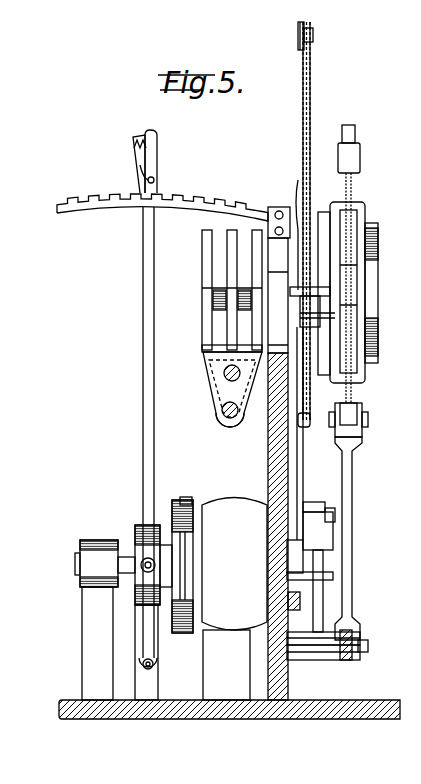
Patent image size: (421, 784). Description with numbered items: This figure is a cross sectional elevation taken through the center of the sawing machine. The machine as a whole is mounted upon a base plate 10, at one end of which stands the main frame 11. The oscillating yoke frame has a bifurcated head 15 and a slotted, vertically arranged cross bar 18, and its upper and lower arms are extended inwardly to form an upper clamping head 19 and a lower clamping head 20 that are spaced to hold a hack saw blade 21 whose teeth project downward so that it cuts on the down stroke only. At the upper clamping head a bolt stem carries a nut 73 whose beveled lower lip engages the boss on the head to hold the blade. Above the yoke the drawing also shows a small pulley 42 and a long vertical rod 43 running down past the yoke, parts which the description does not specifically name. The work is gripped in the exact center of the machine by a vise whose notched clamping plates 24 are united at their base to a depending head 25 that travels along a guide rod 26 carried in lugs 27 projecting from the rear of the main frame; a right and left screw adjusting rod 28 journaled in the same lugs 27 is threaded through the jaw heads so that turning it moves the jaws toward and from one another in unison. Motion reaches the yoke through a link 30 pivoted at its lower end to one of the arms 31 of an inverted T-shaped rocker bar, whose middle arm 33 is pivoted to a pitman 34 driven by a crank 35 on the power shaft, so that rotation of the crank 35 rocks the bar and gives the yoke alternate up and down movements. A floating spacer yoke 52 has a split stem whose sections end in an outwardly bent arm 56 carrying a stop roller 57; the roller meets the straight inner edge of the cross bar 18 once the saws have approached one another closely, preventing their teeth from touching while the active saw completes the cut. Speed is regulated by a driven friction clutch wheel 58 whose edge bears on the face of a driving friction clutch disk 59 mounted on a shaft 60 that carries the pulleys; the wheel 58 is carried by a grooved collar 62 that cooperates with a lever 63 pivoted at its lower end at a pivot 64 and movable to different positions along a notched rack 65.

The base plate 10 is at (325, 700).
The main frame 11 is at (268, 473).
The bifurcated head 15 is at (379, 272).
The cross bar 18 is at (358, 301).
The upper clamping head 19 is at (361, 158).
The lower clamping head 20 is at (369, 422).
The hack saw blade 21 is at (355, 198).
The clamping plates 24 is at (235, 258).
The depending head 25 is at (212, 362).
The guide rod 26 is at (222, 420).
The lugs 27 is at (259, 428).
The screw adjusting rod 28 is at (228, 378).
The link 30 is at (353, 502).
The arms 31 is at (350, 660).
The middle arm 33 is at (320, 600).
The pitman 34 is at (313, 526).
The crank 35 is at (313, 516).
The pulley 42 is at (298, 27).
The rod 43 is at (311, 110).
The floating spacer yoke 52 is at (303, 470).
The outwardly bent arm 56 is at (262, 343).
The stop roller 57 is at (298, 215).
The driven friction clutch wheel 58 is at (185, 500).
The driving friction clutch disk 59 is at (234, 564).
The shaft 60 is at (76, 563).
The grooved collar 62 is at (137, 530).
The lever 63 is at (143, 315).
The pivot 64 is at (153, 664).
The notched rack 65 is at (114, 204).
The nut 73 is at (357, 134).